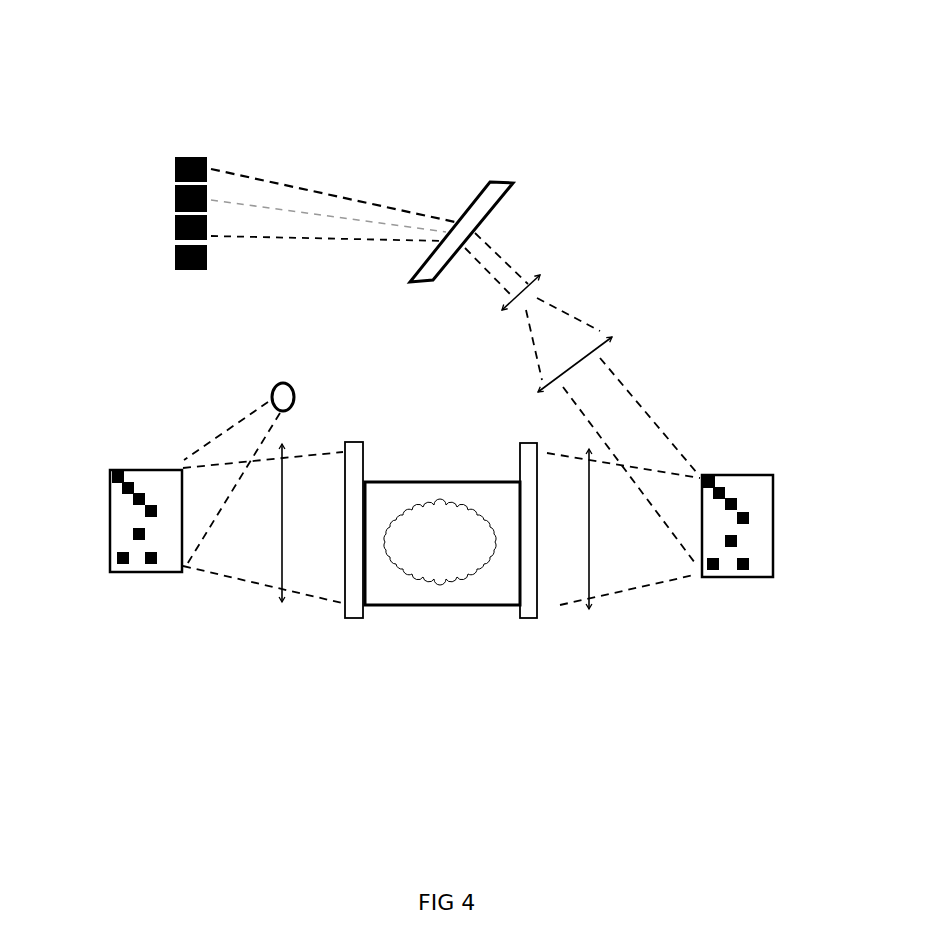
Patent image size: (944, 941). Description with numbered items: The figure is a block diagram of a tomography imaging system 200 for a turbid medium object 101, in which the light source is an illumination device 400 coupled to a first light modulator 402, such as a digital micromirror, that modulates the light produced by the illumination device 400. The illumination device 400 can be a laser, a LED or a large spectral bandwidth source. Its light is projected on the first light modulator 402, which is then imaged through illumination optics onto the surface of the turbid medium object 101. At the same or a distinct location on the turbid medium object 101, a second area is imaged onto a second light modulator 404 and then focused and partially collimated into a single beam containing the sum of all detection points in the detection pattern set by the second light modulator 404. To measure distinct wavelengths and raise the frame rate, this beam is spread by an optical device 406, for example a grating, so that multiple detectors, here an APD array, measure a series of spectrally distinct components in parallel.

The tomography imaging system 200 is at (364, 48).
The optical device 406 is at (489, 171).
The illumination device 400 is at (281, 358).
The first light modulator 402 is at (136, 587).
The second light modulator 404 is at (727, 590).
The turbid medium object 101 is at (427, 625).